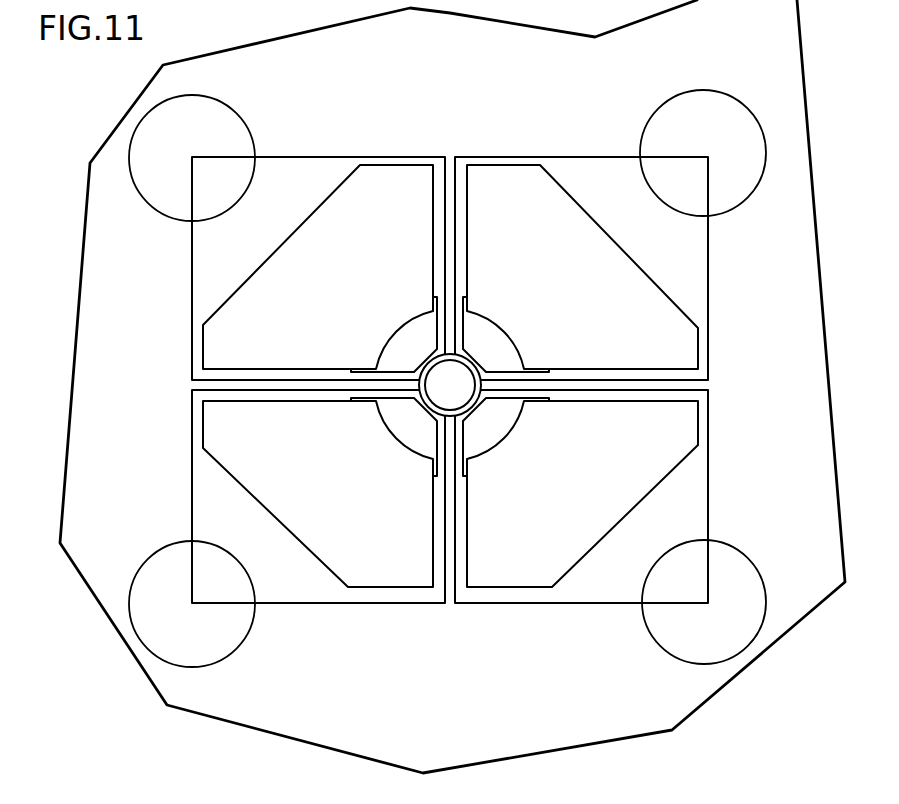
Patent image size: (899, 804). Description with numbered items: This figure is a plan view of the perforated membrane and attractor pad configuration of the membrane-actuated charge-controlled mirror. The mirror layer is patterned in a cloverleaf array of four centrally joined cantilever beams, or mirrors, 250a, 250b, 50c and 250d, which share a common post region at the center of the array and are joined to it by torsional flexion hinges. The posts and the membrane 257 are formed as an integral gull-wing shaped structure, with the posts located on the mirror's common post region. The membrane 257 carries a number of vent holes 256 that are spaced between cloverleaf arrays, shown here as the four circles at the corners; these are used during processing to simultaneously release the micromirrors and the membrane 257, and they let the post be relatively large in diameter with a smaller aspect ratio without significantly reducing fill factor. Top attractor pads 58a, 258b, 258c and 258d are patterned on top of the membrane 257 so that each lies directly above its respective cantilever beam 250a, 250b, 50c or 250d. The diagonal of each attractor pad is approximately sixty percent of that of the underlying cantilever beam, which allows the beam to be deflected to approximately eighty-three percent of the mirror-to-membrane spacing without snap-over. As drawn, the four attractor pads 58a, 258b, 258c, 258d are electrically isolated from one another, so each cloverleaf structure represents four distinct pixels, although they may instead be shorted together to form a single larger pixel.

The membrane 257 is at (115, 386).
The vent holes 256 is at (222, 118).
The cantilever beam 250a is at (305, 173).
The cantilever beam 250b is at (595, 166).
The electrode plate 50c is at (208, 503).
The cantilever beam 250d is at (692, 497).
The inner electrode 58a is at (230, 324).
The top attractor pad 258b is at (663, 326).
The top attractor pad 258c is at (378, 555).
The top attractor pad 258d is at (515, 558).